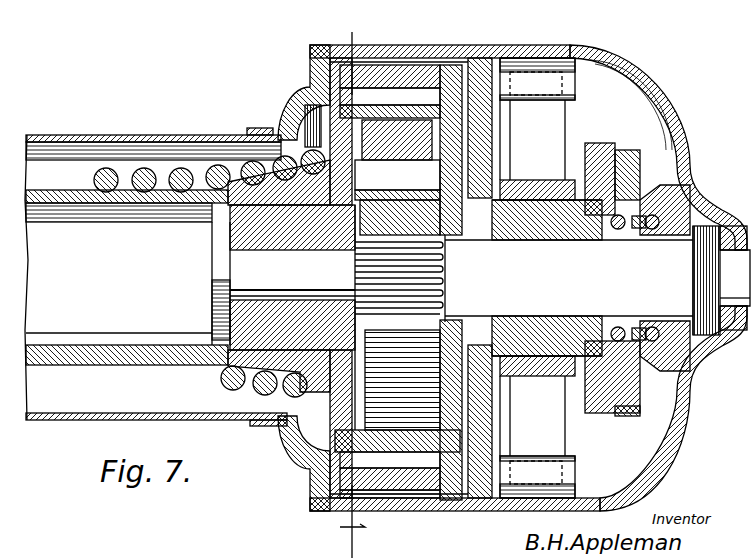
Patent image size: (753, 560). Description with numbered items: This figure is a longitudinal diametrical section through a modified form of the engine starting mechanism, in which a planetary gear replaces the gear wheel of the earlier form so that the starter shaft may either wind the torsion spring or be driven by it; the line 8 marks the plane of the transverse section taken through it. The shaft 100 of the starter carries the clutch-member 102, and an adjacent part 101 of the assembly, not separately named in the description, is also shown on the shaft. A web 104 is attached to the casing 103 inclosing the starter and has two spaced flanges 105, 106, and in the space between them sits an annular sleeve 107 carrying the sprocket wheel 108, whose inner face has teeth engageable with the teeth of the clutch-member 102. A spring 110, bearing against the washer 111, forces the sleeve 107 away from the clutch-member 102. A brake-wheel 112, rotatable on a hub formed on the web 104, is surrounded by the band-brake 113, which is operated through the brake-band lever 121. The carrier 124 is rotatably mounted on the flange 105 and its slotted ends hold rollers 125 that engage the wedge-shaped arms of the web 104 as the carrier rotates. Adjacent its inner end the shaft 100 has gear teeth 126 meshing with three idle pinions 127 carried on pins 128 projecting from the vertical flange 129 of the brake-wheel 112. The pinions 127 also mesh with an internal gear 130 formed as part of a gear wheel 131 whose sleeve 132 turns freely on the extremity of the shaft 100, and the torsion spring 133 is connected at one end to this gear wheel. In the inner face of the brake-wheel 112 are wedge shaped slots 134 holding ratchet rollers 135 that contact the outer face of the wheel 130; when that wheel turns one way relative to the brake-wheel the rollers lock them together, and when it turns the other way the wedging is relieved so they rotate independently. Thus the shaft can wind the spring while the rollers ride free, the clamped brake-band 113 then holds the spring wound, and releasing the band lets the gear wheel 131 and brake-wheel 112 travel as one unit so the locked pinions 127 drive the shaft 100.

The section line 8 is at (352, 286).
The shaft 100 is at (597, 280).
The hub 101 is at (515, 225).
The clutch-member 102 is at (638, 200).
The casing 103 is at (640, 112).
The web 104 is at (492, 137).
The flange 105 is at (612, 158).
The flange 106 is at (560, 213).
The annular sleeve 107 is at (540, 205).
The sprocket wheel 108 is at (607, 150).
The spring 110 is at (652, 230).
The washer 111 is at (614, 230).
The brake-wheel 112 is at (402, 482).
The band-brake 113 is at (360, 68).
The brake-band lever 121 is at (397, 140).
The carrier 124 is at (562, 118).
The rollers 125 is at (566, 92).
The gear teeth 126 is at (447, 273).
The pinions 127 is at (440, 325).
The pins 128 is at (397, 180).
The vertical flange 129 is at (462, 210).
The internal gear 130 is at (390, 103).
The gear wheel 131 is at (312, 135).
The sleeve 132 is at (292, 218).
The torsion spring 133 is at (181, 168).
The wedge shaped slots 134 is at (445, 95).
The ratchet rollers 135 is at (397, 450).